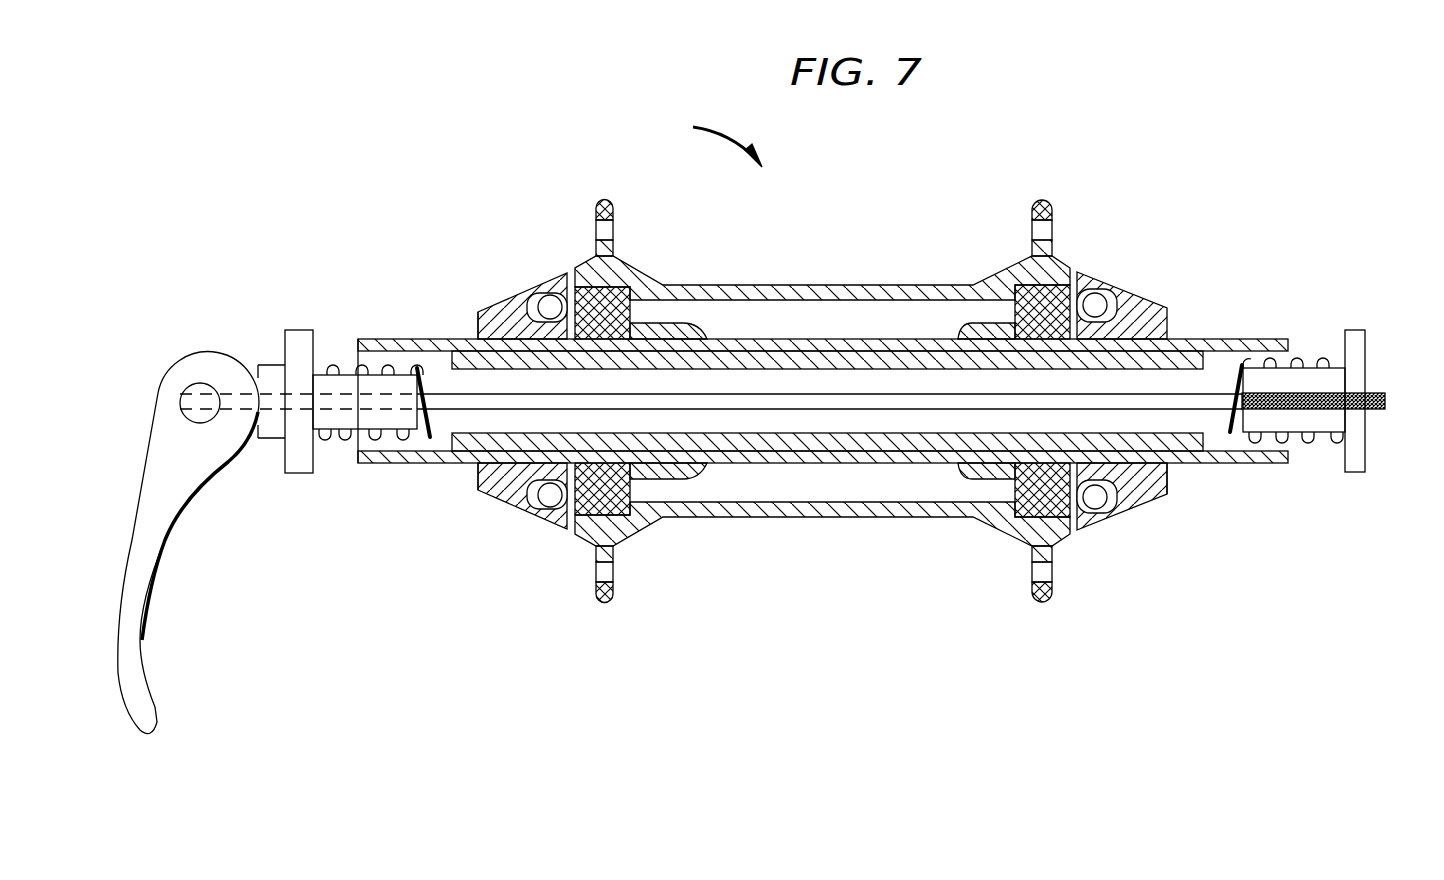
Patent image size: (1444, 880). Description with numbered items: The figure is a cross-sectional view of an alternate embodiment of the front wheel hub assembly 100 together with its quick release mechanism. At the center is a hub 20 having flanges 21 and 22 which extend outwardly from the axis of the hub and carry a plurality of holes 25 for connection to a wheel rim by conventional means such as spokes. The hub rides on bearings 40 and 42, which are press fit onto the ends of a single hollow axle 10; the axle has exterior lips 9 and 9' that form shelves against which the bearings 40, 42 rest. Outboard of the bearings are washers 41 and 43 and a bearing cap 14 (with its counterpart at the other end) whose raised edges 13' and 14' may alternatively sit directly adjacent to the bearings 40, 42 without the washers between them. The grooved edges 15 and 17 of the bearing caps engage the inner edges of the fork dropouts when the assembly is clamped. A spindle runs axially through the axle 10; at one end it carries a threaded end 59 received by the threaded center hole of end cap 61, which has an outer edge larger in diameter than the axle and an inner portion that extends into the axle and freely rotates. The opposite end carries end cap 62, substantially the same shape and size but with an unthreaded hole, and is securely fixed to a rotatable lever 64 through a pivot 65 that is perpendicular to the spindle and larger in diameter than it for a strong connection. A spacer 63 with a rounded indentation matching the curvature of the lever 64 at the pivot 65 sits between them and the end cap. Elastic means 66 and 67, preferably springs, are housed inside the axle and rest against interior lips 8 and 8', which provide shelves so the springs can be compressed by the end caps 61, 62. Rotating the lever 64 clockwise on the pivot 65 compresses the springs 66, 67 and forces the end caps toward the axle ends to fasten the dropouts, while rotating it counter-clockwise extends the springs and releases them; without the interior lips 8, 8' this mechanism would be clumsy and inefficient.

The wheel hub assembly 100 is at (706, 137).
The interior lip 8 is at (377, 410).
The interior lip 8' is at (1267, 398).
The exterior lip 9 is at (670, 391).
The exterior lip 9' is at (957, 399).
The axle 10 is at (400, 466).
The raised edge 13' is at (1166, 408).
The bearing cap 14 is at (501, 301).
The raised edge 14' is at (468, 394).
The grooved edge 15 is at (1167, 477).
The grooved edge 17 is at (477, 327).
The hub 20 is at (792, 288).
The flange 21 is at (1040, 198).
The flange 22 is at (604, 198).
The holes 25 is at (612, 222).
The bearing 40 is at (1028, 290).
The washer 41 is at (1097, 287).
The bearing 42 is at (610, 293).
The washer 43 is at (562, 305).
The threaded end 59 is at (1385, 410).
The end cap 61 is at (1358, 340).
The end cap 62 is at (298, 334).
The spacer 63 is at (260, 440).
The lever 64 is at (158, 532).
The pivot 65 is at (200, 388).
The elastic means 66 is at (372, 440).
The elastic means 67 is at (1332, 357).